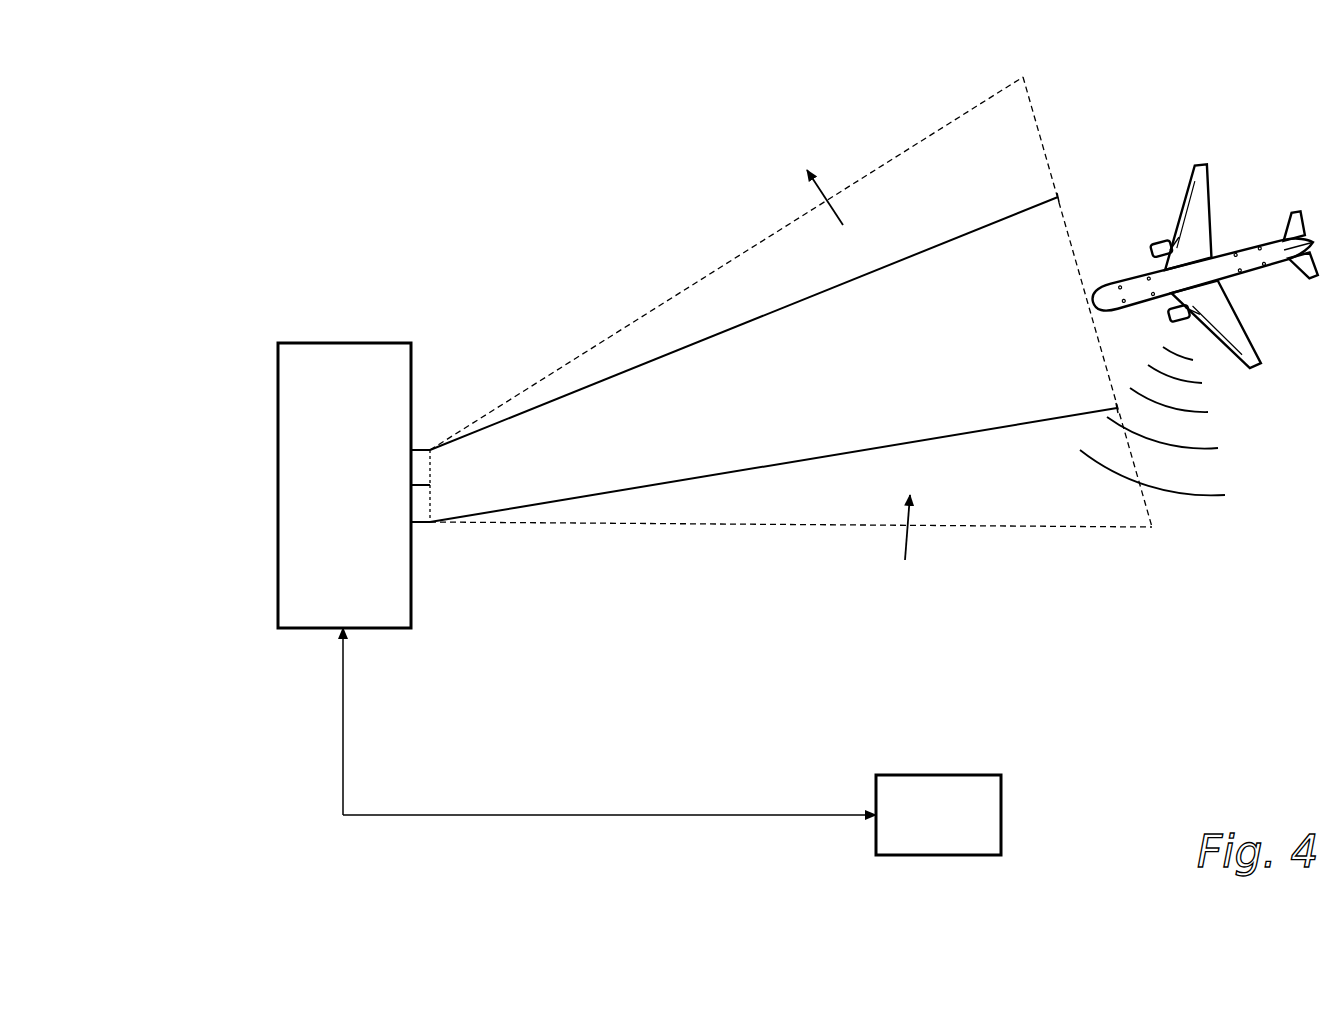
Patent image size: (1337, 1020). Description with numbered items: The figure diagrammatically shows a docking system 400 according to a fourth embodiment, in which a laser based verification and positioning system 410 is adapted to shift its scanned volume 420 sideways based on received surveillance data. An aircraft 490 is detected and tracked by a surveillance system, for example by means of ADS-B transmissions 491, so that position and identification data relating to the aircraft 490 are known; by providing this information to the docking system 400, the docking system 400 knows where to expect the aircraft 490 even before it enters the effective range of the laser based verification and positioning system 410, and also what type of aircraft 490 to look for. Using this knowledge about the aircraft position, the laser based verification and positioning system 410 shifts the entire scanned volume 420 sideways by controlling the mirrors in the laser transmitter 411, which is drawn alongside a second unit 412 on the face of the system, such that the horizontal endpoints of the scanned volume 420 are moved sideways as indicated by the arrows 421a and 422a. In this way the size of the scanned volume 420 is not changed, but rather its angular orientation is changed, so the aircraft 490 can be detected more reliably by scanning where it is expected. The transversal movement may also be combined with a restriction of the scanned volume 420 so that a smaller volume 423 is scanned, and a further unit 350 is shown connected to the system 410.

The docking system 400 is at (237, 503).
The laser based verification and positioning system 410 is at (344, 485).
The laser transmitter 411 is at (418, 465).
The second antenna / receiver 412 is at (422, 503).
The scanned volume 420 is at (738, 285).
The arrow 421a is at (830, 190).
The arrow 422a is at (908, 545).
The smaller volume 423 is at (682, 445).
The aircraft 490 is at (1130, 295).
The ADS-B transmissions 491 is at (1172, 518).
The processing unit 350 is at (938, 815).